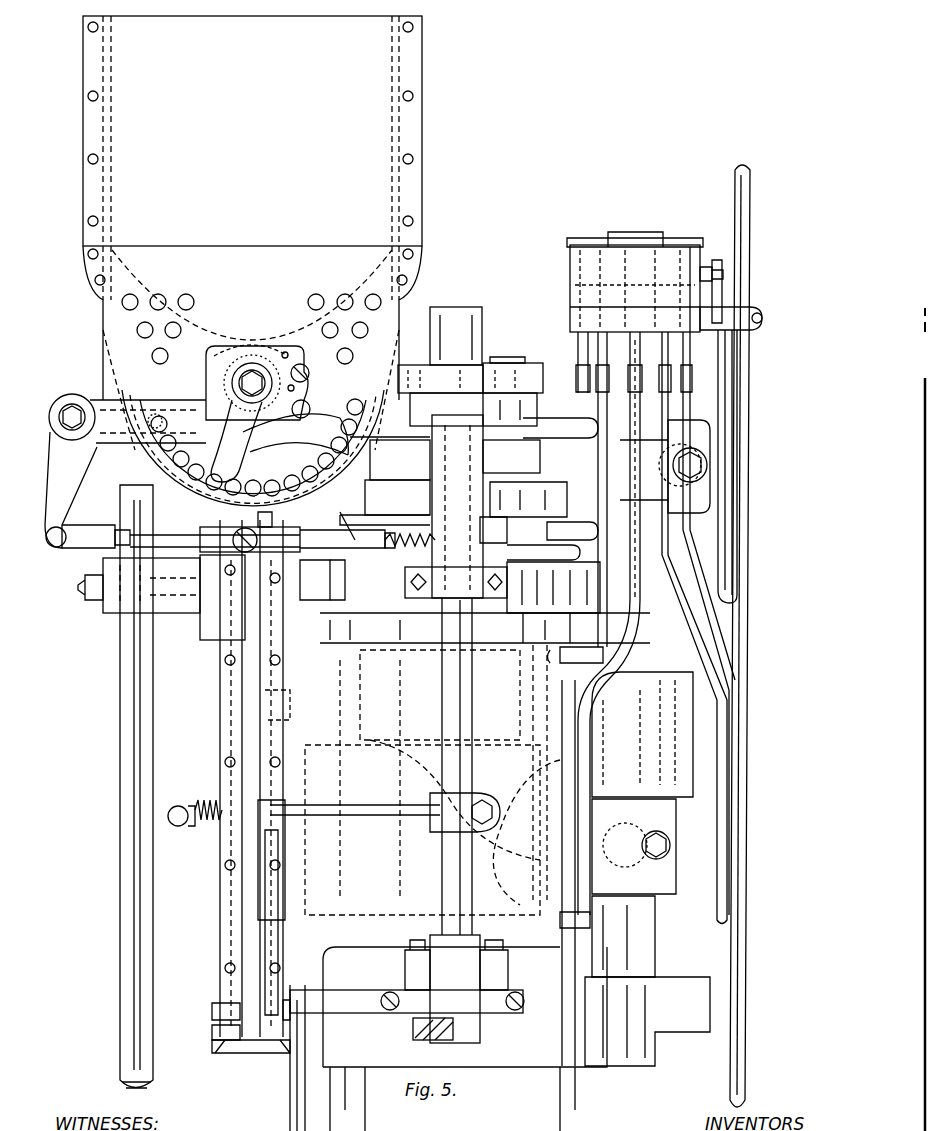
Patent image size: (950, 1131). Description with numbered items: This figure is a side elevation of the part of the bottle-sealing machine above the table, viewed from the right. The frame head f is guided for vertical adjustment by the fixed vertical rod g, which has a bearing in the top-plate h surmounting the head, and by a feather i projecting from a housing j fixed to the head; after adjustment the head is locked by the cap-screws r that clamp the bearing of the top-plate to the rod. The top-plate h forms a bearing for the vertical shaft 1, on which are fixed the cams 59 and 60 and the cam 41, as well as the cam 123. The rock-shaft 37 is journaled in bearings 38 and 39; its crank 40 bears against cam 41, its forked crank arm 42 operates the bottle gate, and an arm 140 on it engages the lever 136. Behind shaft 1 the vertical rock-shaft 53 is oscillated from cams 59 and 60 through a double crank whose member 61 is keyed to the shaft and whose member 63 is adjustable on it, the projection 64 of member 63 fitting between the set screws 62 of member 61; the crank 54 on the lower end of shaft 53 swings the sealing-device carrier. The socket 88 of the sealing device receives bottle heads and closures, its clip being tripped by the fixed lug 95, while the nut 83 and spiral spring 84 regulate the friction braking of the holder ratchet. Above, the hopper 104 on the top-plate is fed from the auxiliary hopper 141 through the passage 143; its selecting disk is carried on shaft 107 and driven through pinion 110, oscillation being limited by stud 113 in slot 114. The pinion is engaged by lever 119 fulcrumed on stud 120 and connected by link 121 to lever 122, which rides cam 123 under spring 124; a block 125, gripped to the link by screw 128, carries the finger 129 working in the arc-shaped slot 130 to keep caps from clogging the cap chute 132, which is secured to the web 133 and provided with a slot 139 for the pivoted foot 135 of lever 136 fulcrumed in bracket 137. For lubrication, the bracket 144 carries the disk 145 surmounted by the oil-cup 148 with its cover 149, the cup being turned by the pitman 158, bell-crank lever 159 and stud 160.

The auxiliary hopper 141 is at (252, 158).
The hopper 104 is at (252, 348).
The shaft 107 is at (252, 380).
The pinion 110 is at (304, 362).
The stud 113 is at (302, 410).
The slot 114 is at (272, 438).
The lever 119 is at (156, 408).
The stud 120 is at (50, 417).
The finger 129 is at (190, 533).
The screw 128 is at (300, 552).
The link 121 is at (190, 560).
The block 125 is at (265, 597).
The lever 122 is at (340, 580).
The cam 123 is at (395, 550).
The spring 124 is at (457, 506).
The arc-shaped slot 130 is at (351, 518).
The cam 60 is at (390, 458).
The cam 59 is at (385, 502).
The bearing 39 is at (456, 582).
The rock-shaft 37 is at (472, 712).
The vertical shaft 1 is at (456, 336).
The cam 41 is at (487, 363).
The crank 40 is at (535, 418).
The oil-cup 148 is at (570, 290).
The disk 145 is at (570, 320).
The cover 149 is at (675, 242).
The stud 160 is at (723, 275).
The bell-crank lever 159 is at (718, 290).
The crank member 63 is at (587, 497).
The crank member 61 is at (601, 630).
The passage 143 is at (620, 655).
The bracket 144 is at (728, 527).
The projection 64 is at (710, 447).
The set screws 62 is at (710, 468).
The pitman 158 is at (743, 968).
The crank 54 is at (676, 808).
The rock-shaft 53 is at (655, 898).
The cap chute 132 is at (283, 686).
The slot 139 is at (283, 738).
The bracket 137 is at (285, 885).
The lever 136 is at (283, 927).
The web 133 is at (306, 952).
The pivoted foot 135 is at (212, 1032).
The socket 88 is at (248, 1053).
The lug 95 is at (290, 1015).
The bearing 38 is at (480, 948).
The forked crank arm 42 is at (453, 1030).
The arm 140 is at (325, 805).
The nut 83 is at (178, 805).
The spiral spring 84 is at (205, 830).
The vertical rod g is at (153, 880).
The cap-screws r is at (82, 612).
The top-plate h is at (305, 608).
The head f is at (456, 856).
The housing j is at (655, 930).
The feather i is at (690, 977).